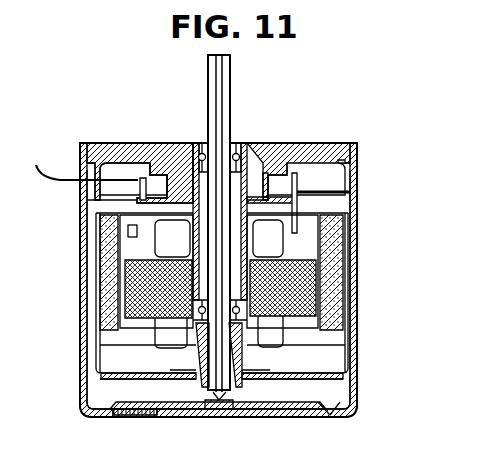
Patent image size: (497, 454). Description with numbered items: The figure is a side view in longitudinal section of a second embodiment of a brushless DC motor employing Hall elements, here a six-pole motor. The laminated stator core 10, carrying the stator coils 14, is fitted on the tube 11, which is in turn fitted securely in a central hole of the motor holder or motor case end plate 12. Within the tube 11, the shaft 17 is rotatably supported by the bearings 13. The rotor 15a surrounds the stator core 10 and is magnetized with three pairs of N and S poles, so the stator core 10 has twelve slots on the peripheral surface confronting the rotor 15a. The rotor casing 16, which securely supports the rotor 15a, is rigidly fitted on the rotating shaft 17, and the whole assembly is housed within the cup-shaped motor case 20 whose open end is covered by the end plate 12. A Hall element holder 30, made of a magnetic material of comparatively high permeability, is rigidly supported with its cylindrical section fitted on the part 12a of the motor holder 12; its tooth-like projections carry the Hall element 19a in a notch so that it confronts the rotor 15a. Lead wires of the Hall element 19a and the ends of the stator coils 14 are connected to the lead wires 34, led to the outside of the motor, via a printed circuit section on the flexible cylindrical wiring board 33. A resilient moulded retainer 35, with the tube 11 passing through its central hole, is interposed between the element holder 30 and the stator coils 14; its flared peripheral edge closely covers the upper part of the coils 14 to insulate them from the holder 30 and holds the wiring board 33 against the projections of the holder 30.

The stator core 10 is at (133, 333).
The tube 11 is at (182, 352).
The motor case end plate 12 is at (97, 133).
The part of the motor holder 12a is at (175, 143).
The bearings 13 is at (237, 145).
The stator coils 14 is at (160, 247).
The rotor 15a is at (344, 261).
The rotor casing 16 is at (347, 303).
The shaft 17 is at (230, 72).
The Hall element 19a is at (128, 232).
The motor case 20 is at (358, 352).
The Hall element holder 30 is at (270, 186).
The flexible cylindrical wiring board 33 is at (147, 177).
The lead wires 34 is at (38, 163).
The retainer 35 is at (297, 207).